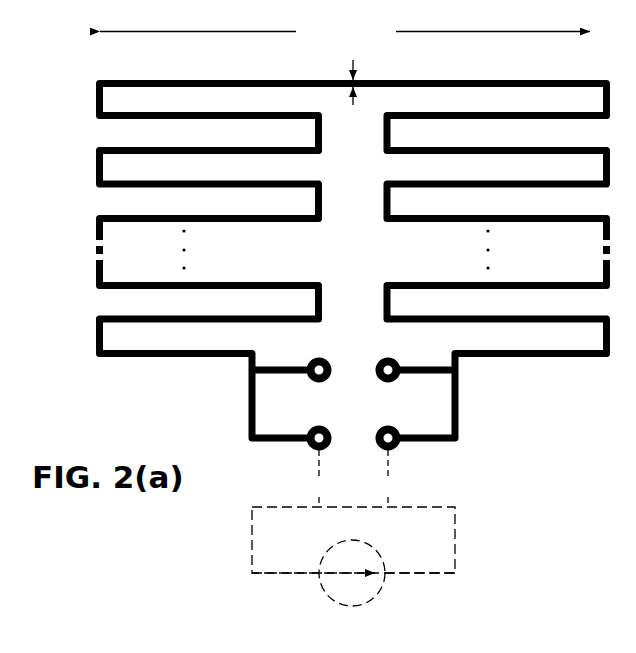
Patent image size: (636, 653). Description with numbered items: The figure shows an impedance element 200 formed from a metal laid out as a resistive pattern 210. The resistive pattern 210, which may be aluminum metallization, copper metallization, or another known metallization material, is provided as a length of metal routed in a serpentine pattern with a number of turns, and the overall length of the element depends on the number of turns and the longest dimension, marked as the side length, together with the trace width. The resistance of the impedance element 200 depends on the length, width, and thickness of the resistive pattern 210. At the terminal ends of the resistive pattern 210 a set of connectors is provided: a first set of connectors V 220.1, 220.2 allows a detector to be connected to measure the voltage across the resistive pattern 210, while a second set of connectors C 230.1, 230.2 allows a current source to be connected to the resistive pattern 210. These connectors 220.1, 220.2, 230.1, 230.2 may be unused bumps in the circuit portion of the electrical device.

The impedance element 200 is at (321, 313).
The resistive pattern 210 is at (165, 392).
The connector V 220.1 is at (328, 382).
The connector V 220.2 is at (378, 382).
The connector C 230.1 is at (326, 450).
The connector C 230.2 is at (381, 450).